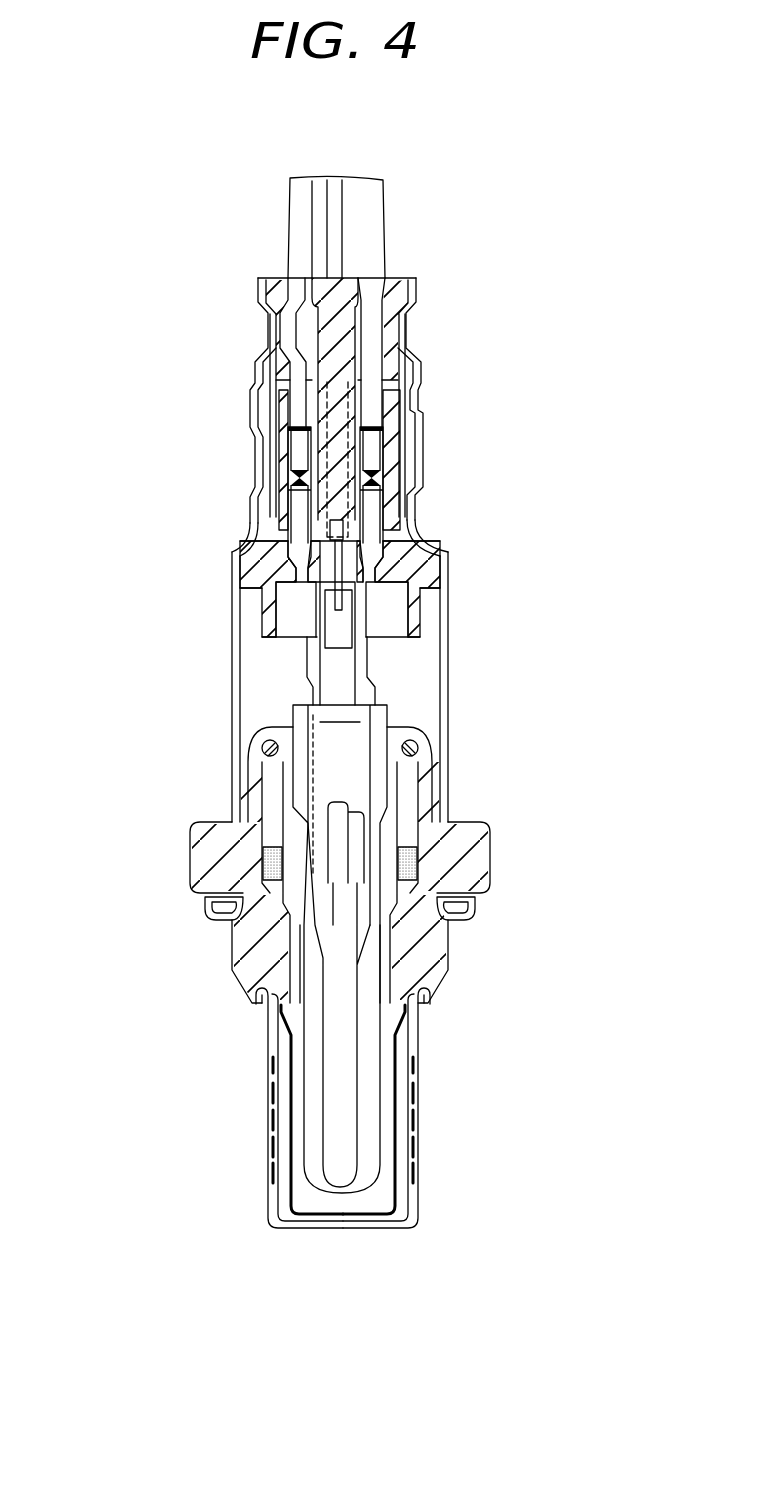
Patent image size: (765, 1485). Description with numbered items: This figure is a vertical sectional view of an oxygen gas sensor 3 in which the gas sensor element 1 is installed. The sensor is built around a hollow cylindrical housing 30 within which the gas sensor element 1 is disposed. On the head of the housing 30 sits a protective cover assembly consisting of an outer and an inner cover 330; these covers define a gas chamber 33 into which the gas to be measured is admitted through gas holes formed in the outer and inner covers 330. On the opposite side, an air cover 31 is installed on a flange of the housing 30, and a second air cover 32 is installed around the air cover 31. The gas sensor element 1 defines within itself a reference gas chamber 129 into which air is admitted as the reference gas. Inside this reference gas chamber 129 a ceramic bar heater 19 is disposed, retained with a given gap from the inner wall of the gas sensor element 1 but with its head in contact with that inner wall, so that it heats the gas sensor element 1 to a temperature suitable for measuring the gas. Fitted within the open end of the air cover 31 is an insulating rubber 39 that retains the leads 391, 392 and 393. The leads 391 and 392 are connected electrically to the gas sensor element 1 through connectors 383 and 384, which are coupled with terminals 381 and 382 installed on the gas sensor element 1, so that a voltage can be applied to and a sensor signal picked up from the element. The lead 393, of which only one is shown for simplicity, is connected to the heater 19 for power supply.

The gas sensor element 1 is at (370, 1072).
The ceramic bar heater 19 is at (330, 1048).
The reference gas chamber 129 is at (290, 917).
The oxygen gas sensor 3 is at (176, 858).
The housing 30 is at (488, 861).
The air cover 31 is at (448, 724).
The air cover 32 is at (416, 521).
The gas chamber 33 is at (384, 1139).
The outer and inner cover 330 is at (418, 1155).
The insulating rubber 39 is at (400, 283).
The terminal 381 is at (373, 675).
The terminal 382 is at (303, 657).
The connector 383 is at (380, 531).
The connector 384 is at (293, 513).
The lead 391 is at (372, 222).
The lead 392 is at (298, 243).
The lead 393 is at (342, 183).